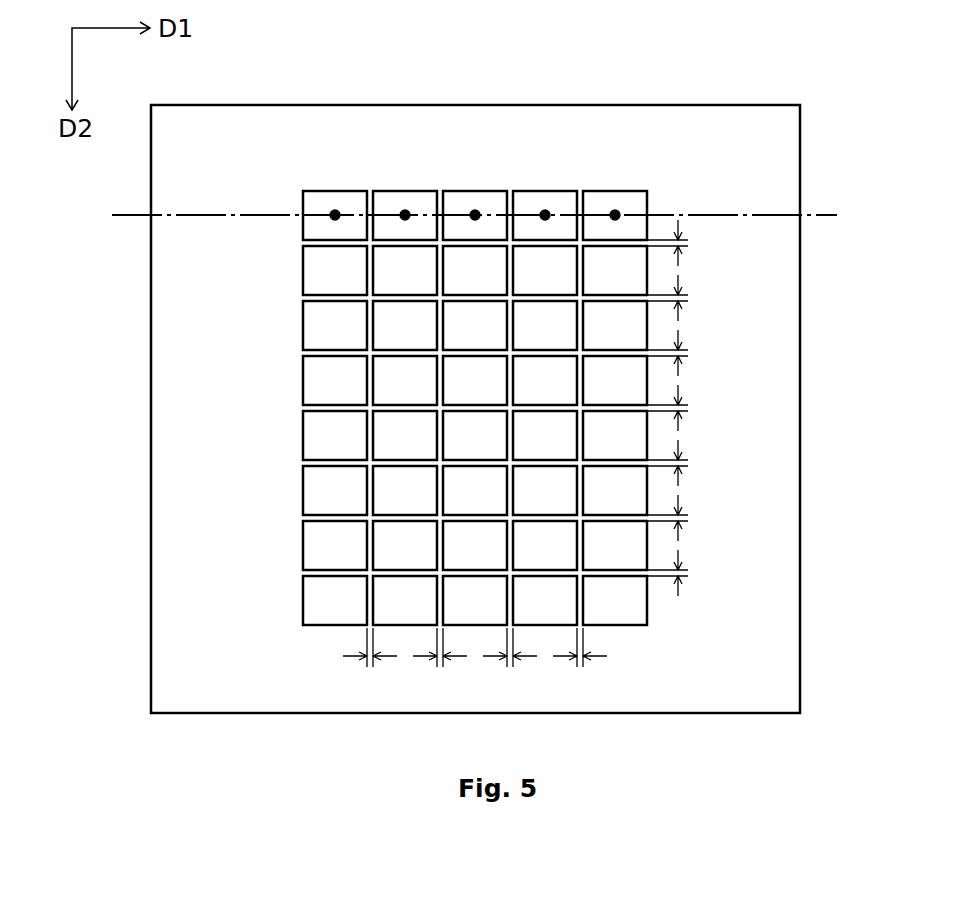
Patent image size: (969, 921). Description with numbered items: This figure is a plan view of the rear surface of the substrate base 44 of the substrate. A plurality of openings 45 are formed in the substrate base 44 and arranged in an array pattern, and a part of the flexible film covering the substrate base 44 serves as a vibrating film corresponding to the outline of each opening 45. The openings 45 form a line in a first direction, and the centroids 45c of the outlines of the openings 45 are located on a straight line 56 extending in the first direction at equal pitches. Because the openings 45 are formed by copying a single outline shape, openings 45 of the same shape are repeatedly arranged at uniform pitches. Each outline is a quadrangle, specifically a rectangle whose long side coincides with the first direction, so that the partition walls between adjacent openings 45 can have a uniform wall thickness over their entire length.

The substrate base 44 is at (800, 343).
The opening 45 is at (303, 228).
The centroid 45c is at (335, 215).
The straight line 56 is at (826, 215).